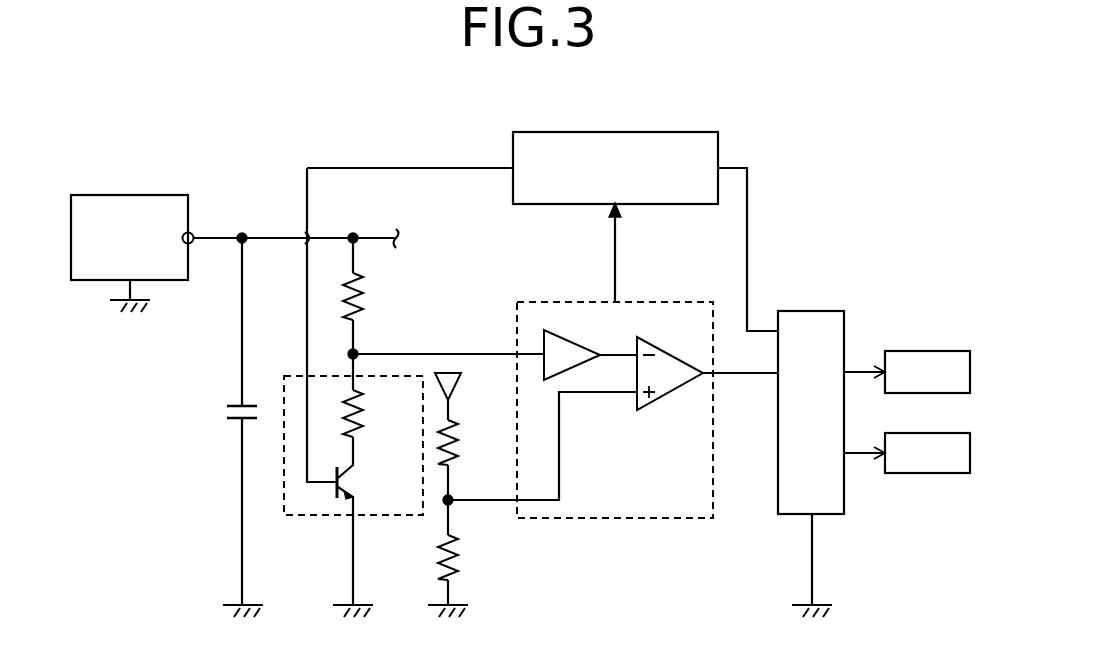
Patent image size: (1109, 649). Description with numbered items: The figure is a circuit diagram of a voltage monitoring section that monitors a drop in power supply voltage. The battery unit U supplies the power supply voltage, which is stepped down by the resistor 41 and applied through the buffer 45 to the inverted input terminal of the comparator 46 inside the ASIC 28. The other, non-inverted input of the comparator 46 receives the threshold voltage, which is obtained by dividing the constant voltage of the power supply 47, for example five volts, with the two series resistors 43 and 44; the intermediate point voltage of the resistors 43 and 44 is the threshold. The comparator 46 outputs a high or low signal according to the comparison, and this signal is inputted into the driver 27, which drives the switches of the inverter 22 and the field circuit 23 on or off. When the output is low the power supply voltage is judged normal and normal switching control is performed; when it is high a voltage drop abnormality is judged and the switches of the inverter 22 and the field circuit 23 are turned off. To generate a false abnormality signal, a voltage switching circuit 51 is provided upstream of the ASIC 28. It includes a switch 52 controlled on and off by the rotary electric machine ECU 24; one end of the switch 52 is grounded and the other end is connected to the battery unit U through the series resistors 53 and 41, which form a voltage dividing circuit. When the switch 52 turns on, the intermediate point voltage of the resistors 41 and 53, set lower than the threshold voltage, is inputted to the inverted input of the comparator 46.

The battery unit U is at (168, 195).
The rotary electric machine ECU 24 is at (678, 132).
The ASIC 28 is at (683, 302).
The buffer 45 is at (566, 336).
The comparator 46 is at (669, 395).
The driver 27 is at (828, 311).
The inverter 22 is at (957, 351).
The field circuit 23 is at (957, 473).
The resistor 41 is at (361, 299).
The voltage switching circuit 51 is at (298, 520).
The switch 52 is at (338, 496).
The resistor 53 is at (361, 416).
The power supply 47 is at (458, 386).
The resistor 43 is at (456, 447).
The resistor 44 is at (456, 562).